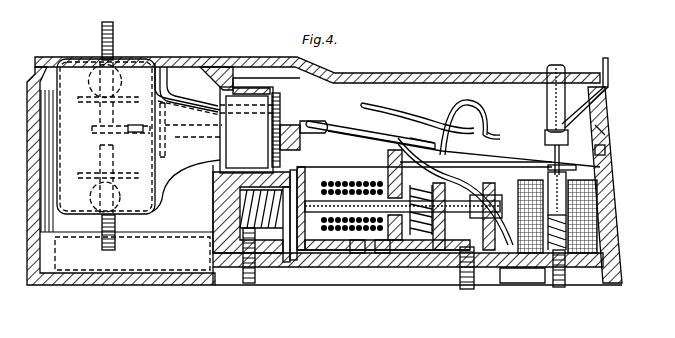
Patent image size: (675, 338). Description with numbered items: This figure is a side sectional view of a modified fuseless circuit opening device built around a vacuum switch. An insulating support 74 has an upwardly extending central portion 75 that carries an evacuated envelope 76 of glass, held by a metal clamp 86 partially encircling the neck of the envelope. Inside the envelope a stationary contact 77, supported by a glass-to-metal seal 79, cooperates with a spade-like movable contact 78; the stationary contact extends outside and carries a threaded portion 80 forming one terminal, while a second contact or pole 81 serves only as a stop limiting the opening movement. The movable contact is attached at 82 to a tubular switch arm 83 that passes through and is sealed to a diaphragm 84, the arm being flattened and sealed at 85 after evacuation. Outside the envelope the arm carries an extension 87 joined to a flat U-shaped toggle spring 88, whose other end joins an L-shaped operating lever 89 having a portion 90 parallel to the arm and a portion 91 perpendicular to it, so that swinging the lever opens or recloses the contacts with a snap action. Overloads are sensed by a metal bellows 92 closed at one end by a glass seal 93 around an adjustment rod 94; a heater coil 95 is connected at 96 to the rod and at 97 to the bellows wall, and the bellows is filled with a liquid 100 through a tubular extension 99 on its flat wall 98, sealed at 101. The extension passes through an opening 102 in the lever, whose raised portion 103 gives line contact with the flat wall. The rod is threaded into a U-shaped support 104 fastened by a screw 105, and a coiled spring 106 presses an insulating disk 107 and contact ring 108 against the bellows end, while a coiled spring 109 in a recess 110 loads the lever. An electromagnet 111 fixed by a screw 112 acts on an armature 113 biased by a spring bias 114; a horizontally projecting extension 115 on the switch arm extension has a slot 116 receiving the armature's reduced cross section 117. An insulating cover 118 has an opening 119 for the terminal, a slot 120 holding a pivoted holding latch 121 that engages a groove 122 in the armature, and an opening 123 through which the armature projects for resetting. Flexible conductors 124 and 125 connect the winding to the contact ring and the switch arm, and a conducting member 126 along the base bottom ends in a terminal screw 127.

The insulating support 74 is at (68, 286).
The upwardly extending central portion 75 is at (213, 196).
The evacuated envelope 76 is at (133, 67).
The stationary contact 77 is at (99, 111).
The movable contact 78 is at (100, 131).
The glass-to-metal seal 79 is at (74, 63).
The threaded portion 80 is at (114, 30).
The second contact or pole 81 is at (100, 158).
The attachment 82 is at (132, 126).
The tubular switch arm 83 is at (194, 135).
The diaphragm 84 is at (284, 122).
The flattened portion 85 is at (313, 125).
The metal clamp 86 is at (243, 88).
The extension 87 is at (358, 131).
The toggle spring 88 is at (486, 120).
The L-shaped operating lever 89 is at (489, 141).
The portion 90 is at (421, 138).
The portion 91 is at (260, 133).
The metal bellows 92 is at (337, 252).
The glass seal 93 is at (413, 252).
The adjustment rod 94 is at (453, 238).
The heater coil 95 is at (357, 178).
The connection 96 is at (318, 252).
The connection 97 is at (373, 176).
The flat wall 98 is at (287, 264).
The tubular extension 99 is at (213, 224).
The liquid 100 is at (303, 252).
The seal 101 is at (246, 172).
The opening 102 is at (271, 167).
The raised portion 103 is at (303, 175).
The U-shaped support 104 is at (481, 224).
The screw 105 is at (474, 289).
The coiled spring 106 is at (453, 174).
The insulating disk 107 is at (401, 134).
The contact ring 108 is at (382, 258).
The coiled spring 109 is at (213, 237).
The recess 110 is at (218, 287).
The electromagnet 111 is at (600, 218).
The screw 112 is at (563, 280).
The armature 113 is at (612, 168).
The spring bias 114 is at (608, 204).
The horizontally projecting extension 115 is at (532, 162).
The slot 116 is at (606, 152).
The reduced cross section 117 is at (605, 134).
The cover 118 is at (382, 74).
The opening 119 is at (165, 60).
The slot 120 is at (610, 87).
The holding latch 121 is at (609, 69).
The groove 122 is at (546, 126).
The opening 123 is at (567, 73).
The flexible conductor 124 is at (511, 272).
The flexible conductor 125 is at (397, 109).
The conducting member 126 is at (357, 268).
The terminal screw 127 is at (255, 287).